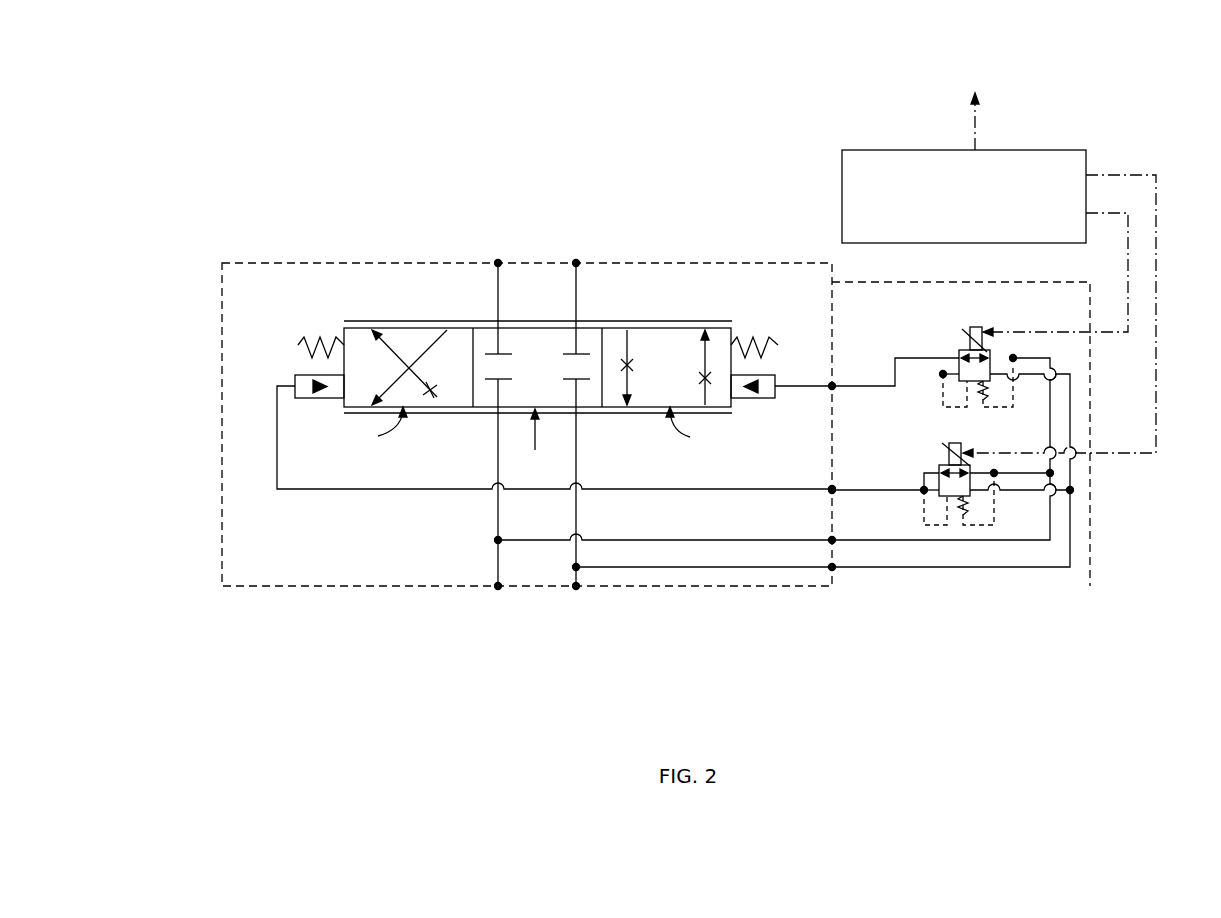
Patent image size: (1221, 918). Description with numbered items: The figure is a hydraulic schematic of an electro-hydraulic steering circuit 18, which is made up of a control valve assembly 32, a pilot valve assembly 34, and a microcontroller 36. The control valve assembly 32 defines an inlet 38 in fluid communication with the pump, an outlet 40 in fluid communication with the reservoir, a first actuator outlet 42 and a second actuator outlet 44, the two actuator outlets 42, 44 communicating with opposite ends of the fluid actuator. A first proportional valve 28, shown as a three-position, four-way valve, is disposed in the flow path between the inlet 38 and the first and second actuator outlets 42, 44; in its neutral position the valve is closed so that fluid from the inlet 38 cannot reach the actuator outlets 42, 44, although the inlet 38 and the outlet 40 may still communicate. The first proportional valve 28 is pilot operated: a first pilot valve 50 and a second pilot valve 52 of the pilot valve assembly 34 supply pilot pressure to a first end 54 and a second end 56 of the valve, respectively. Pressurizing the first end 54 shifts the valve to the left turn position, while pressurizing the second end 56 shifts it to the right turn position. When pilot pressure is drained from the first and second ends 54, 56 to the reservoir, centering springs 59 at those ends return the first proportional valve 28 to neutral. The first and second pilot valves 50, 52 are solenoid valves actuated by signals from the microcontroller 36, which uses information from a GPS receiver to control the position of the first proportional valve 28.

The electro-hydraulic steering circuit 18 is at (268, 196).
The first proportional valve 28 is at (672, 327).
The control valve assembly 32 is at (383, 586).
The pilot valve assembly 34 is at (998, 586).
The microcontroller 36 is at (1052, 150).
The inlet 38 is at (576, 586).
The outlet 40 is at (498, 586).
The first actuator outlet 42 is at (498, 263).
The second actuator outlet 44 is at (576, 263).
The first pilot valve 50 is at (943, 465).
The second pilot valve 52 is at (959, 351).
The first end 54 is at (343, 330).
The second end 56 is at (733, 332).
The centering springs 59 is at (298, 345).